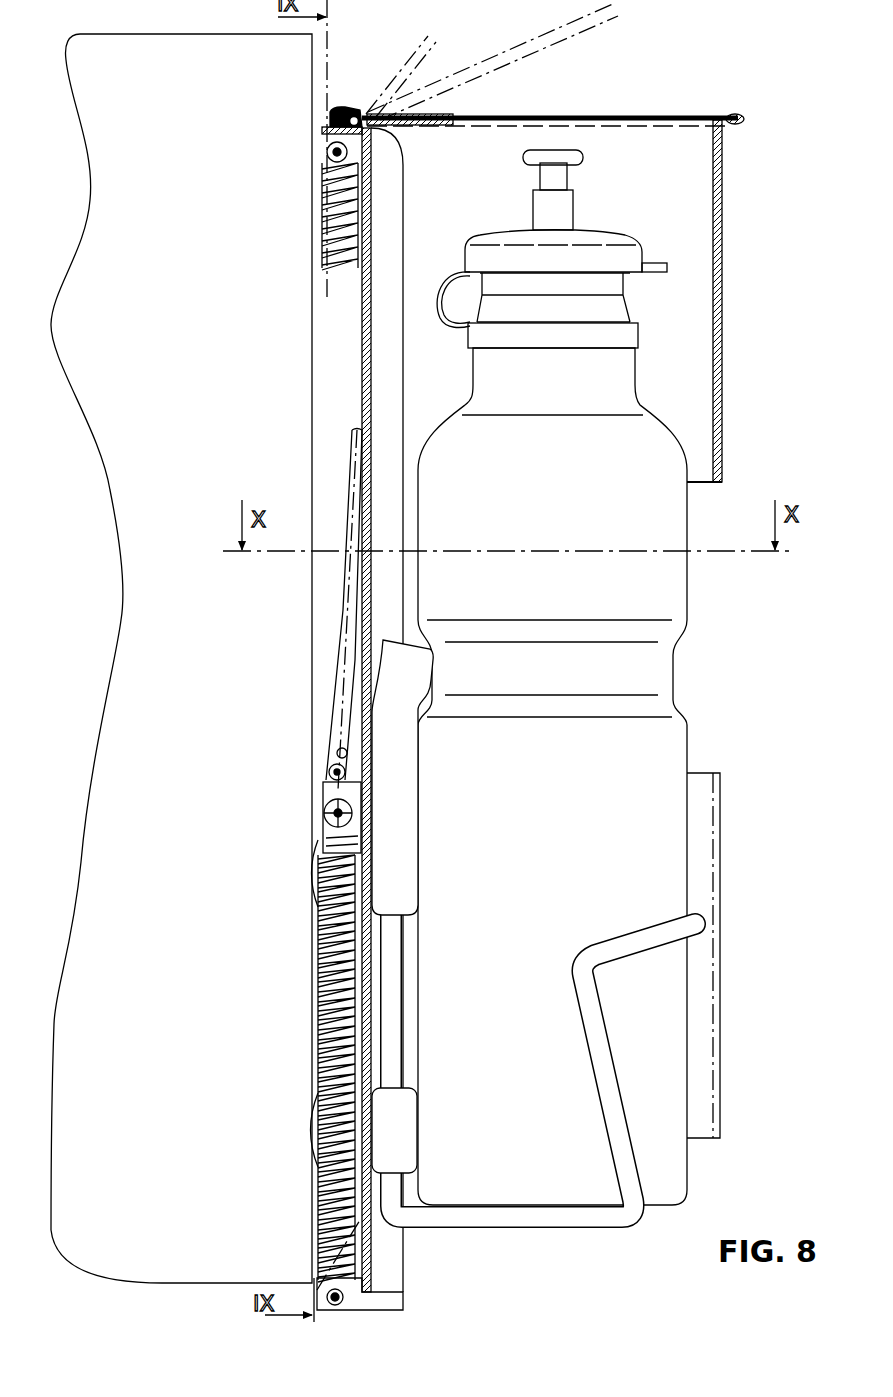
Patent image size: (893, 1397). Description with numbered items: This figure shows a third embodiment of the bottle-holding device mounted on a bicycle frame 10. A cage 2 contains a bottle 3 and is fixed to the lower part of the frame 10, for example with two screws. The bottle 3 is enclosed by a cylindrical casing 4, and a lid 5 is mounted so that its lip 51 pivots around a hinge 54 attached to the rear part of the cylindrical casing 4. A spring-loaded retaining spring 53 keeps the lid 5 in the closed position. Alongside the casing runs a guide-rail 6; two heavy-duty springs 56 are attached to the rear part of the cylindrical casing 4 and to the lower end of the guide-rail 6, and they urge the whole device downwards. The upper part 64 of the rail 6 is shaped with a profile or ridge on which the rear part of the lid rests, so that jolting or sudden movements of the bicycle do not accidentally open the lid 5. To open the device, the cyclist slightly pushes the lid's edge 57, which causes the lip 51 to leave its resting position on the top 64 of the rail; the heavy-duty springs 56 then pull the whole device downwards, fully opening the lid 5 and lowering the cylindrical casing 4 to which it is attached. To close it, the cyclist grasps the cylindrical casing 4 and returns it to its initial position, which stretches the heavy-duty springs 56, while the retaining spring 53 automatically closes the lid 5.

The cage 2 is at (598, 1058).
The bottle 3 is at (578, 836).
The cylindrical casing 4 is at (724, 255).
The lid 5 is at (415, 58).
The guide-rail 6 is at (390, 255).
The frame 10 is at (189, 374).
The lip 51 is at (363, 98).
The retaining spring 53 is at (325, 175).
The hinge 54 is at (330, 117).
The heavy-duty springs 56 is at (327, 255).
The lid's edge 57 is at (742, 117).
The upper part of the rail 64 is at (387, 150).